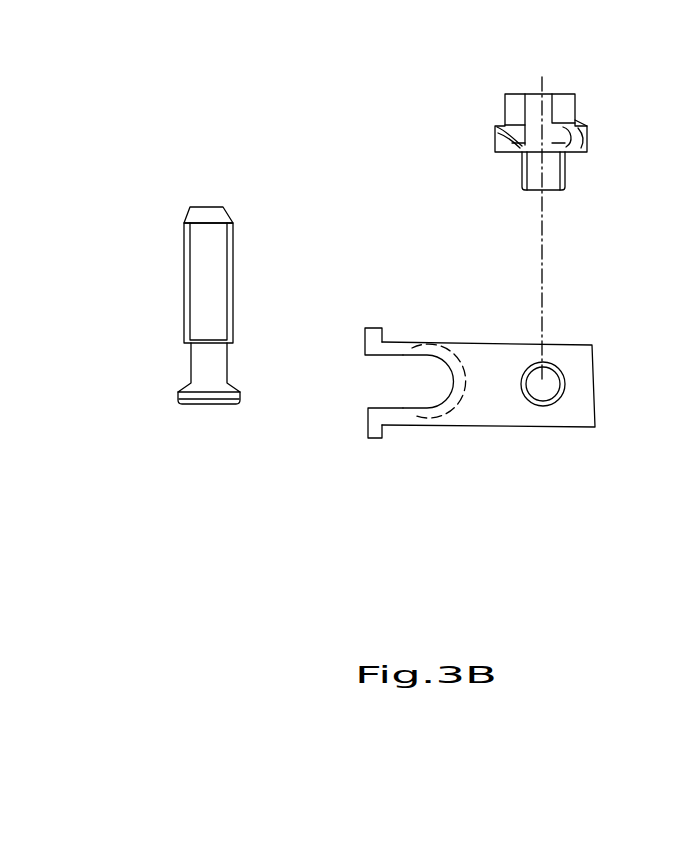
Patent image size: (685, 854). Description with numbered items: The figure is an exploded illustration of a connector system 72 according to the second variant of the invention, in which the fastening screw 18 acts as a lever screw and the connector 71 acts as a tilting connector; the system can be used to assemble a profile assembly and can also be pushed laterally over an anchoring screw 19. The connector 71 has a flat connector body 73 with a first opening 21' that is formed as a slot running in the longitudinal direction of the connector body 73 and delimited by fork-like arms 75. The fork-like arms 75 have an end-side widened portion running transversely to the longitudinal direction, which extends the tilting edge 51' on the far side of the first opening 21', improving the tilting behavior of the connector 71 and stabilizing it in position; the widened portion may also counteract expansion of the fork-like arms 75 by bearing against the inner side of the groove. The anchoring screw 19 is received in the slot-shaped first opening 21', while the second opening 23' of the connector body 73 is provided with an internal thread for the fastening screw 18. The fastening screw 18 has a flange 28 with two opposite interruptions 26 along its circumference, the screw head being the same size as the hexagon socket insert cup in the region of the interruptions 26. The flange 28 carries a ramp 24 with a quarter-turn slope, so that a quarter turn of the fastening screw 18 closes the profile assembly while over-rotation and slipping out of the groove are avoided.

The connector system 72 is at (104, 152).
The anchoring screw 19 is at (198, 280).
The fastening screw 18 is at (563, 102).
The ramp 24 is at (522, 146).
The flange 28 is at (577, 121).
The interruptions 26 is at (563, 148).
The connector 71 is at (548, 437).
The connector body 73 is at (490, 360).
The tilting edge 51' is at (345, 383).
The first opening 21' is at (424, 345).
The fork-like arms 75 is at (420, 347).
The second opening 23' is at (578, 349).